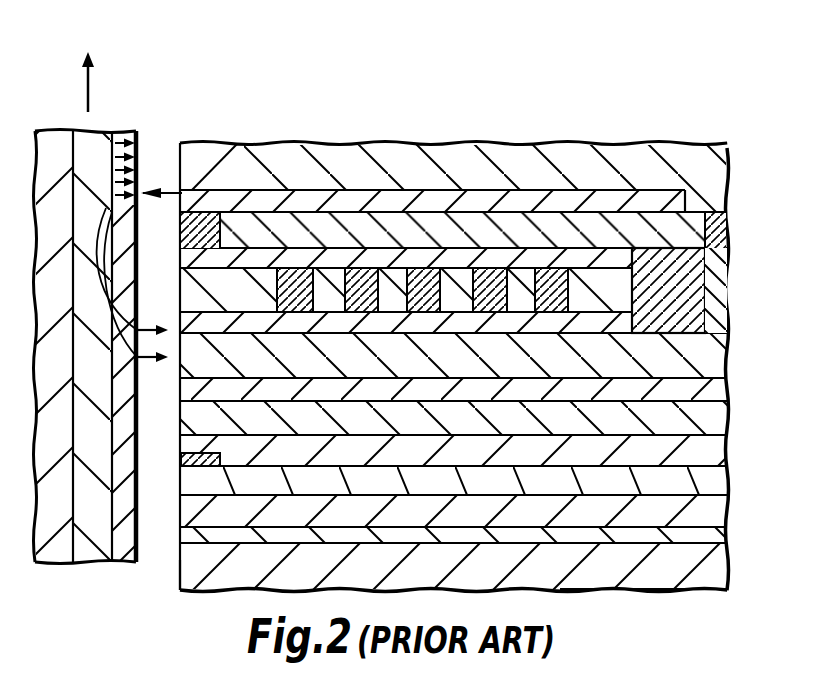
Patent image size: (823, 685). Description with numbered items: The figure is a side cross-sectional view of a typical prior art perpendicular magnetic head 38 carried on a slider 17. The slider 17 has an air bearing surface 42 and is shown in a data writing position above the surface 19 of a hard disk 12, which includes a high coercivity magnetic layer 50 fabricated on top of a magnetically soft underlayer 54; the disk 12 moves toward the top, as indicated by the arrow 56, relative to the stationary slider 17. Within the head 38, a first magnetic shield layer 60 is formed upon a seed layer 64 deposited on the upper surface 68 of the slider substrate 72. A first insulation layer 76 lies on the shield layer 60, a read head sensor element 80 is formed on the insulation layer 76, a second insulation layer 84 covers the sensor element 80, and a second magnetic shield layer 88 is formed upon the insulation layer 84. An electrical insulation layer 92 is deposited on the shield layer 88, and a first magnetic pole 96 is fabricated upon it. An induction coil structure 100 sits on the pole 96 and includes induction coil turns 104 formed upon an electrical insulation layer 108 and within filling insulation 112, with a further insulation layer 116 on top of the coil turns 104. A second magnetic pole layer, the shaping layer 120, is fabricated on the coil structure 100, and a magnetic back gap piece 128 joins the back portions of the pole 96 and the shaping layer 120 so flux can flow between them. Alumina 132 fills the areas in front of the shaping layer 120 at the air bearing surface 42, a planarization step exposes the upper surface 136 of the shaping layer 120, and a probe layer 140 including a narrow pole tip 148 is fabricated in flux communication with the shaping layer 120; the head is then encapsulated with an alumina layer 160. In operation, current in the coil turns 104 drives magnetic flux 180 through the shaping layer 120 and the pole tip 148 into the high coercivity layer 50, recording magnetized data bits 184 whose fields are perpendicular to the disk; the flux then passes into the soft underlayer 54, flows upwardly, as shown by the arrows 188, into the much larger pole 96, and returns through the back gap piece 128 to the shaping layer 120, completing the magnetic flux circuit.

The hard disk 12 is at (32, 556).
The slider 17 is at (630, 581).
The surface of the hard disk 19 is at (135, 538).
The perpendicular magnetic head 38 is at (290, 130).
The air bearing surface 42 is at (175, 560).
The high coercivity magnetic layer 50 is at (122, 494).
The magnetically soft underlayer 54 is at (100, 398).
The arrow indicating disk motion 56 is at (88, 92).
The first magnetic shield layer 60 is at (712, 524).
The seed layer 64 is at (712, 554).
The upper surface of the slider substrate 68 is at (505, 539).
The slider substrate 72 is at (712, 584).
The first insulation layer 76 is at (712, 490).
The read head sensor element 80 is at (181, 460).
The second insulation layer 84 is at (712, 459).
The second magnetic shield layer 88 is at (712, 427).
The electrical insulation layer 92 is at (712, 395).
The first magnetic pole 96 is at (712, 368).
The induction coil structure 100 is at (617, 300).
The induction coil turns 104 is at (383, 300).
The electrical insulation layer 108 is at (497, 318).
The filling insulation 112 is at (250, 300).
The further insulation layer 116 is at (463, 249).
The shaping layer 120 is at (703, 200).
The magnetic back gap piece 128 is at (687, 312).
The alumina 132 is at (222, 228).
The upper surface of the shaping layer 136 is at (522, 200).
The probe layer 140 is at (448, 200).
The pole tip 148 is at (197, 185).
The alumina layer 160 is at (344, 160).
The magnetic flux 180 is at (168, 203).
The magnetized data bits 184 is at (138, 160).
The arrows indicating upward flux flow 188 is at (144, 324).